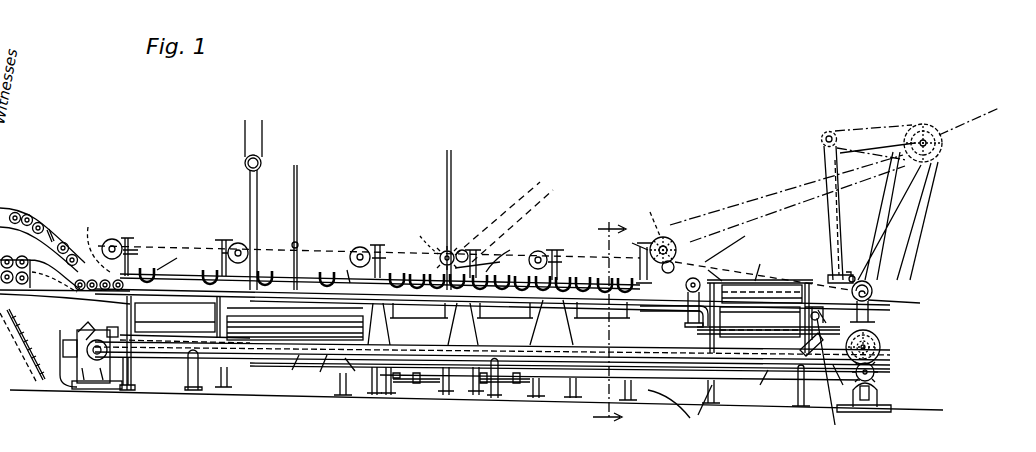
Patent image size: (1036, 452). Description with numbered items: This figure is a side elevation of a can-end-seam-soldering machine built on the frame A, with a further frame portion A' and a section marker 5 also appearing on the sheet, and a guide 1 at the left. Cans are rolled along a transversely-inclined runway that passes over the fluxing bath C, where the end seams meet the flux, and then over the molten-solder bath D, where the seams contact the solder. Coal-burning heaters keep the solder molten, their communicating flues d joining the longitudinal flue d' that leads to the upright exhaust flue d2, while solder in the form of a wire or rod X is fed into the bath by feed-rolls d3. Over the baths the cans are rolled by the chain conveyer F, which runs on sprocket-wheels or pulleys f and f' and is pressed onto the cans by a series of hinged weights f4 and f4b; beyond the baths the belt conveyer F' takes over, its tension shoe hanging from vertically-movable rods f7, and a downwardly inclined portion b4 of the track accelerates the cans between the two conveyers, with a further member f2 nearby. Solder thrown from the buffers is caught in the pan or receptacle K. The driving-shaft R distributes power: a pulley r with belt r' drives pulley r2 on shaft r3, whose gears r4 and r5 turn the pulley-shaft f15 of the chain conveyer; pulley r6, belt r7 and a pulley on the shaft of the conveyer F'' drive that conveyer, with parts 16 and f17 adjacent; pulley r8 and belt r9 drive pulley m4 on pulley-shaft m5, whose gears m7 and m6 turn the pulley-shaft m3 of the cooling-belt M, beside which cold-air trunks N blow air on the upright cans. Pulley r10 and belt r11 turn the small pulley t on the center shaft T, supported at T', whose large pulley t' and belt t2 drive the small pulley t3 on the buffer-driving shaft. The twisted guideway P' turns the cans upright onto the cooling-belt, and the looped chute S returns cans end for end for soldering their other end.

The inclined guide 1 is at (26, 356).
The curved chute or runway S is at (70, 386).
The pulley f' is at (118, 240).
The endless conveyer F' is at (95, 240).
The weights f4 is at (173, 259).
The sprocket-wheel or pulley f is at (554, 268).
The upright or exhaust flue d2 is at (262, 146).
The fluxing bath C is at (303, 260).
The longitudinal flue d' is at (341, 269).
The wire or rod X is at (452, 170).
The feed-rolls d3 is at (490, 230).
The endless conveyer F is at (421, 236).
The molten-solder bath D is at (502, 254).
The weights f4b is at (584, 266).
The section line 5 is at (609, 325).
The pulley r2 is at (674, 240).
The gear r4 is at (648, 217).
The gear r5 is at (632, 241).
The downwardly inclined portion b4 is at (683, 302).
The arm f2 is at (690, 308).
The pan or receptacle K is at (780, 282).
The endless conveyer F'' is at (765, 265).
The pulley-shaft f15 is at (717, 266).
The guides or rods f7 is at (737, 245).
The pulley T' is at (804, 198).
The large pulley t' is at (827, 105).
The small pulley t is at (847, 105).
The belt t2 is at (840, 209).
The small pulley t3 is at (842, 277).
The driving-shaft R is at (928, 143).
The pulley r10 is at (936, 155).
The pulley r6 is at (976, 117).
The pulley r8 is at (928, 122).
The center shaft T is at (951, 112).
The belt r11 is at (863, 127).
The belt r' is at (786, 190).
The shaft r3 is at (797, 206).
The belt r7 is at (906, 203).
The belt r9 is at (917, 240).
The roller 16 is at (870, 278).
The bar f17 is at (902, 303).
The pulley-shaft m5 is at (870, 343).
The pulley m4 is at (881, 350).
The gear m7 is at (940, 349).
The pulley-shaft m3 is at (875, 372).
The gear m6 is at (880, 388).
The curved and twisted guideway P' is at (826, 377).
The frame A is at (471, 402).
The frame A' is at (355, 372).
The cold-air trunks N is at (563, 378).
The cooling-belt M is at (316, 375).
The communicating flues d is at (507, 322).